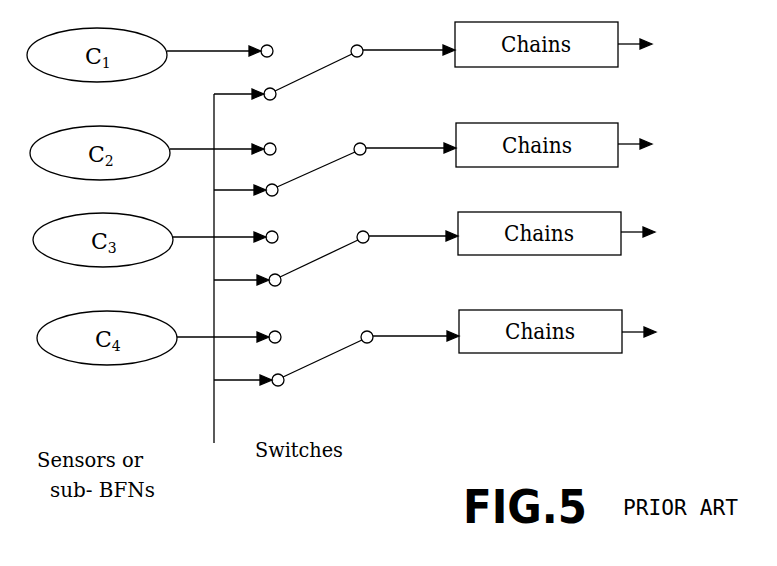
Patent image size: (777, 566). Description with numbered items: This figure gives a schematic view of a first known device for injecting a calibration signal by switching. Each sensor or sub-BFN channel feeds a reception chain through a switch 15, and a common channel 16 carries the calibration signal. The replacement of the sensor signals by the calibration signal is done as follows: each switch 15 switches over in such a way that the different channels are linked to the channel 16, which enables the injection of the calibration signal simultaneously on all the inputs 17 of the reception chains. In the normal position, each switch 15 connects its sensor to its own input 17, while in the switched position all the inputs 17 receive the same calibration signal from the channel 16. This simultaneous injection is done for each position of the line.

The switch 15 is at (317, 218).
The channel 16 is at (211, 455).
The input 17 is at (411, 178).